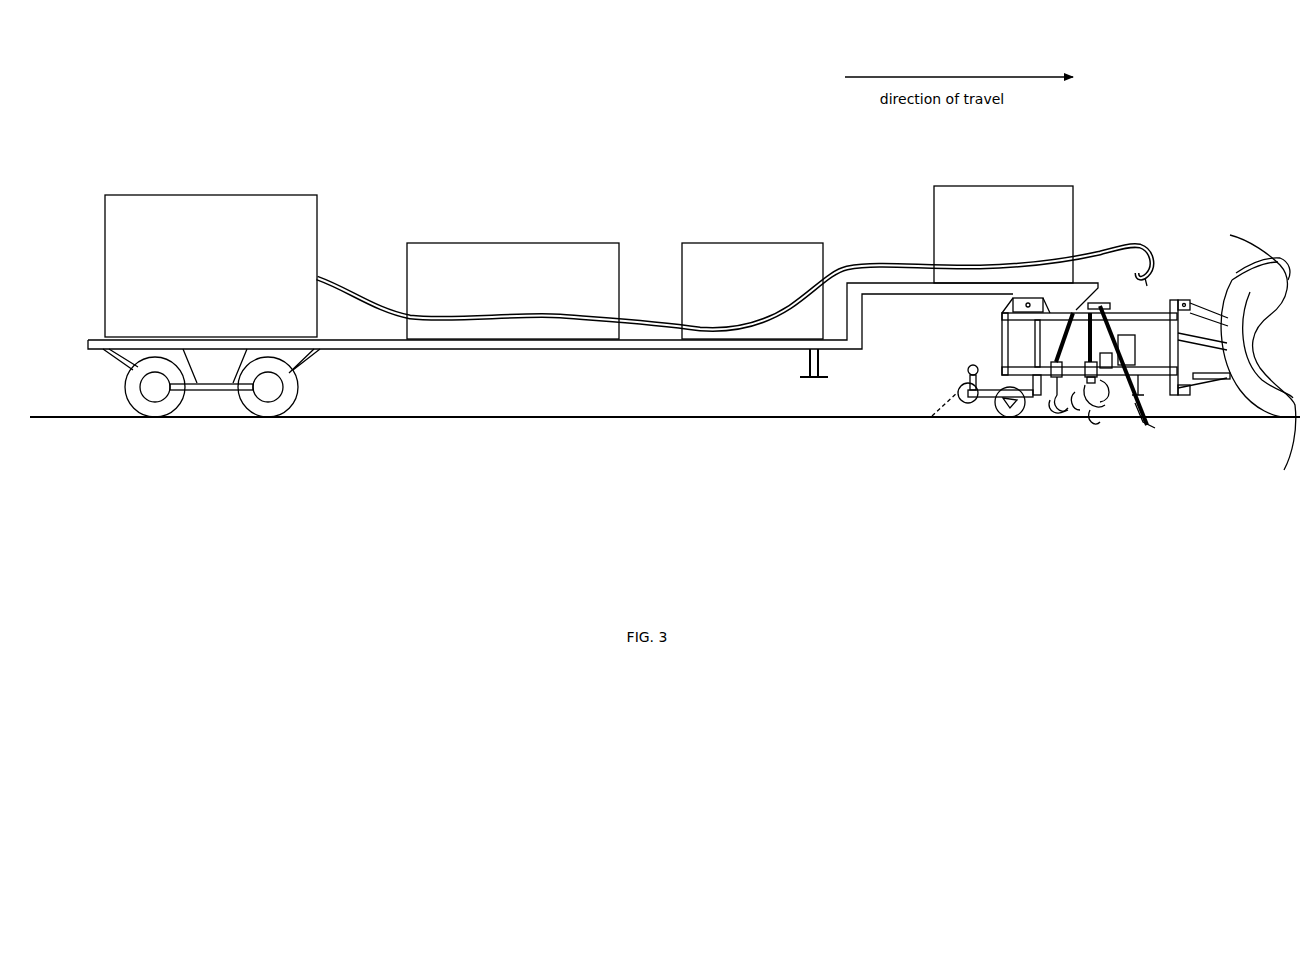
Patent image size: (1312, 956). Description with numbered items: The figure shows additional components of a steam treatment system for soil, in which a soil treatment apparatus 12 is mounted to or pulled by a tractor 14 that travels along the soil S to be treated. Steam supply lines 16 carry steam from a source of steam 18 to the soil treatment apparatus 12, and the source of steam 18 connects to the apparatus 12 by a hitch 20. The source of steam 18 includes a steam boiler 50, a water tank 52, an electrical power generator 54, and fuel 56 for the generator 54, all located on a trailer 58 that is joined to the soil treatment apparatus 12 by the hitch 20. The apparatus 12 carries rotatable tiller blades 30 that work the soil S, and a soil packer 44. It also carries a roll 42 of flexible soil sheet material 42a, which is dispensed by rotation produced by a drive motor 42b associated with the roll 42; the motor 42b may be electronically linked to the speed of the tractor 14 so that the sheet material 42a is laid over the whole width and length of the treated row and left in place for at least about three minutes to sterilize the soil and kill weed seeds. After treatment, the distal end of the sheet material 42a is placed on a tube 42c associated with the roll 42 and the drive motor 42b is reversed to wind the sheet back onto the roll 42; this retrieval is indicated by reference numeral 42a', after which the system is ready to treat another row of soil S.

The soil treatment apparatus 12 is at (1172, 270).
The tractor 14 is at (1247, 297).
The steam supply lines 16 is at (353, 297).
The source of steam 18 is at (593, 245).
The hitch 20 is at (1007, 307).
The rotatable tiller blades 30 is at (1088, 428).
The roll 42 is at (949, 408).
The soil sheet material 42a is at (871, 462).
The retrieval of the sheet material 42a' is at (899, 404).
The drive motor 42b is at (967, 363).
The tube 42c is at (958, 388).
The soil packer 44 is at (997, 378).
The steam boiler 50 is at (211, 266).
The water tank 52 is at (513, 291).
The electrical power generator 54 is at (1003, 234).
The fuel 56 is at (752, 291).
The trailer 58 is at (635, 351).
The soil S is at (1242, 427).